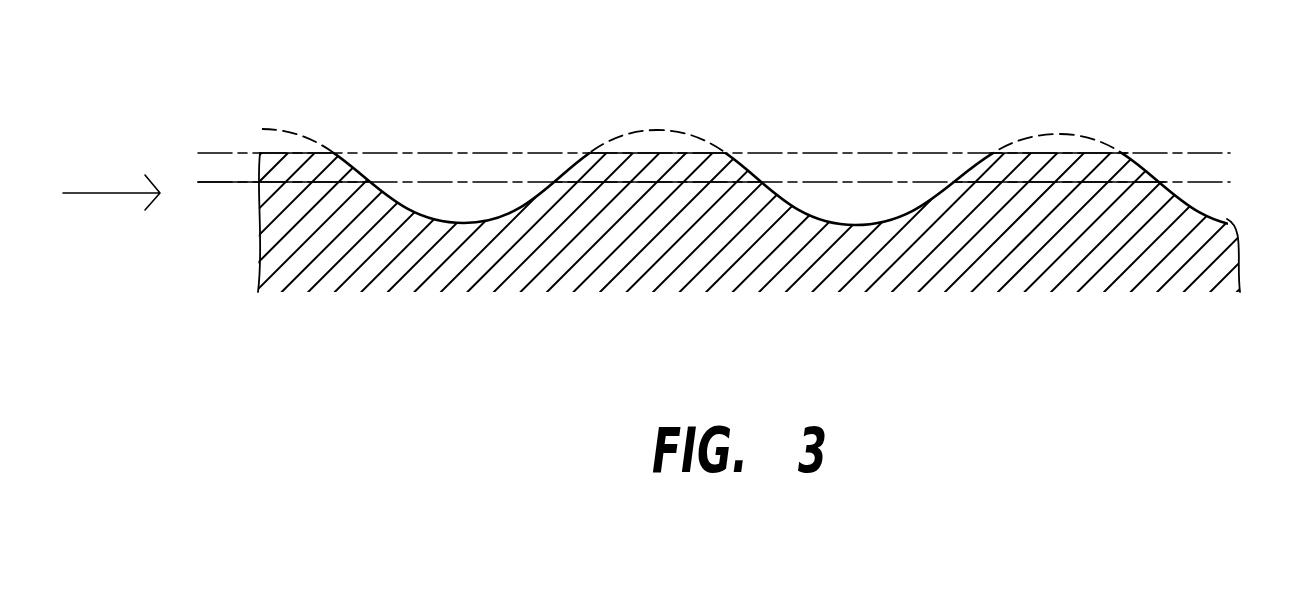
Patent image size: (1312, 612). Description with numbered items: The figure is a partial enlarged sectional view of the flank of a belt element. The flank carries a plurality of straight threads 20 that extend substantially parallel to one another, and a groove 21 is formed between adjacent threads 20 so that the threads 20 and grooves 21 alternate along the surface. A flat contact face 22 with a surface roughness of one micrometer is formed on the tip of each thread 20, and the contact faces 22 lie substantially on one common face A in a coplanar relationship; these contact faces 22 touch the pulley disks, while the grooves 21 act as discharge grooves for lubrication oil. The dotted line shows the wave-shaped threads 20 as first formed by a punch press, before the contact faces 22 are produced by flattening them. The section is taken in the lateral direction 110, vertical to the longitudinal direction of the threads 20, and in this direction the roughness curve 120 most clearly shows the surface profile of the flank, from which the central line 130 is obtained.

The thread 20 is at (758, 131).
The groove 21 is at (445, 192).
The contact face 22 is at (293, 153).
The lateral direction 110 is at (103, 197).
The roughness curve 120 is at (1234, 224).
The central line 130 is at (213, 183).
The common face A is at (212, 153).